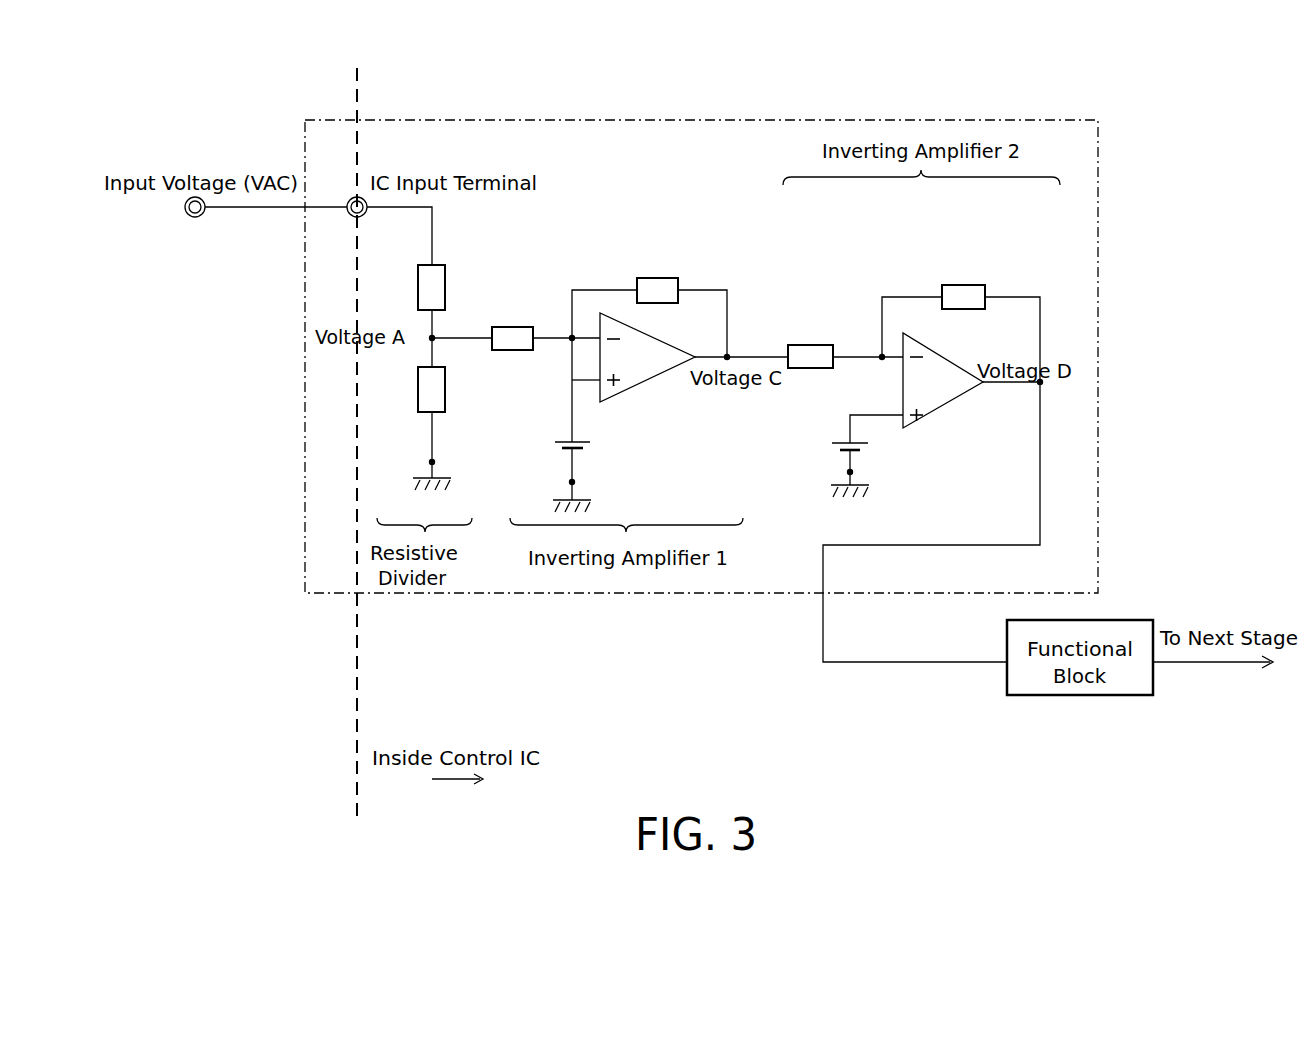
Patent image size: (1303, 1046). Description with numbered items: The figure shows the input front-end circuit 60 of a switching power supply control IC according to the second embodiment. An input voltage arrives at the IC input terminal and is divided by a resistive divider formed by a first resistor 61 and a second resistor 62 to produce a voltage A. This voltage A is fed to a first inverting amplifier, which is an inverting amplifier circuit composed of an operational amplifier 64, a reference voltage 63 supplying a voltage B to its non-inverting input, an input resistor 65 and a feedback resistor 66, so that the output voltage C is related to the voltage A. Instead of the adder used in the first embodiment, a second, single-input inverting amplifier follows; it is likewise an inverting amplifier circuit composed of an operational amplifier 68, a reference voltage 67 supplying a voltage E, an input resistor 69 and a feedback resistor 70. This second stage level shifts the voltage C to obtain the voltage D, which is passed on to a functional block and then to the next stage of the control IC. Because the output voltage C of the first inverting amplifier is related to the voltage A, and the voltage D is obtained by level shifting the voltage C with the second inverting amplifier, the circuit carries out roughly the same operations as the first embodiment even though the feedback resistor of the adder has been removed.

The input front-end circuit 60 is at (447, 120).
The resistor R1 61 is at (446, 290).
The resistor R2 62 is at (446, 400).
The reference voltage 63 is at (552, 446).
The operational amplifier 64 is at (646, 381).
The resistor R3 65 is at (512, 351).
The resistor R4 66 is at (652, 304).
The reference voltage 67 is at (838, 449).
The operational amplifier 68 is at (940, 406).
The resistor R6 69 is at (806, 369).
The resistor R7 70 is at (950, 309).